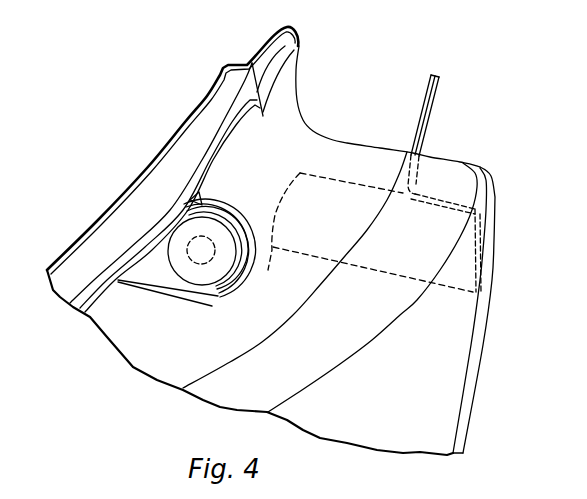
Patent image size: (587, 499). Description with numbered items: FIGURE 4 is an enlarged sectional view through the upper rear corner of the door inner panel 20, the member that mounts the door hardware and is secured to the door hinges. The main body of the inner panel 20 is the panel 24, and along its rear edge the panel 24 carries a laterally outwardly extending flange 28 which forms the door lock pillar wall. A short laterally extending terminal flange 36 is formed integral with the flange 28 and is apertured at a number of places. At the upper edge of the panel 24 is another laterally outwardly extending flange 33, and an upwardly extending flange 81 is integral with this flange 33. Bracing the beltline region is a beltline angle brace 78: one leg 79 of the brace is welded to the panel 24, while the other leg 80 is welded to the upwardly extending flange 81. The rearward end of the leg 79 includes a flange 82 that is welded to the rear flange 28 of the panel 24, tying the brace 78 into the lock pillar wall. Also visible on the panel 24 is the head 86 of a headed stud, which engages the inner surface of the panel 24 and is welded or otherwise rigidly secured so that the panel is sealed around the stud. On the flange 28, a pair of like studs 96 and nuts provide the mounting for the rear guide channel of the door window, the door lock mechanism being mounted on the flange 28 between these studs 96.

The door inner panel 20 is at (465, 432).
The panel 24 is at (487, 319).
The laterally outwardly extending flange 28 is at (447, 377).
The laterally outwardly extending flange 33 is at (433, 157).
The terminal flange 36 is at (147, 168).
The beltline angle brace 78 is at (417, 194).
The leg 79 is at (488, 259).
The leg 80 is at (418, 119).
The upwardly extending flange 81 is at (437, 98).
The flange 82 is at (367, 235).
The head 86 is at (202, 273).
The studs 96 is at (208, 236).